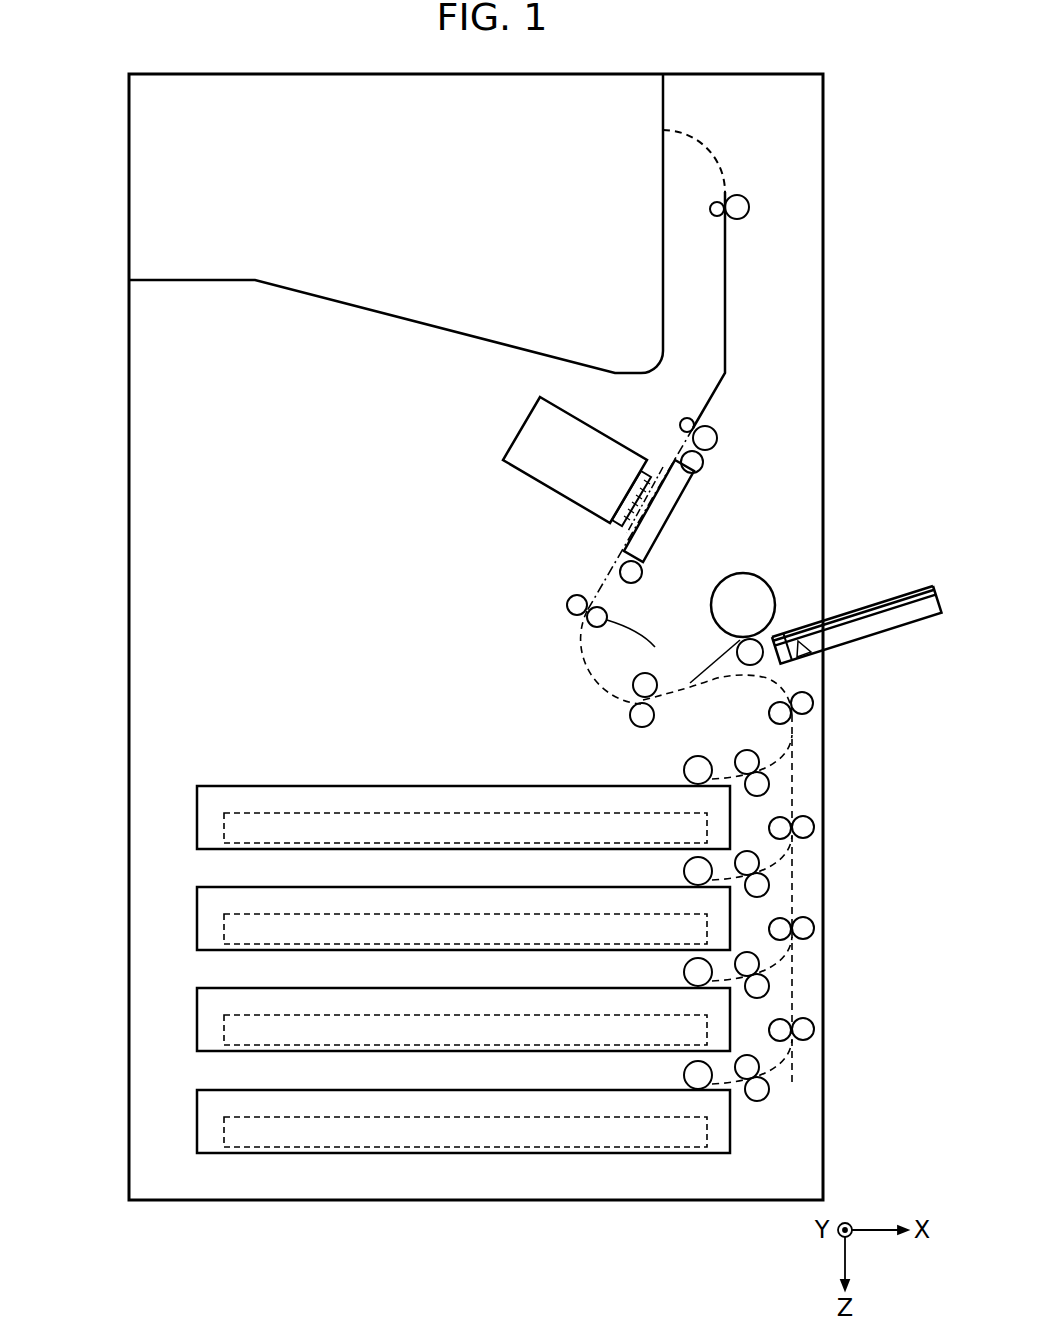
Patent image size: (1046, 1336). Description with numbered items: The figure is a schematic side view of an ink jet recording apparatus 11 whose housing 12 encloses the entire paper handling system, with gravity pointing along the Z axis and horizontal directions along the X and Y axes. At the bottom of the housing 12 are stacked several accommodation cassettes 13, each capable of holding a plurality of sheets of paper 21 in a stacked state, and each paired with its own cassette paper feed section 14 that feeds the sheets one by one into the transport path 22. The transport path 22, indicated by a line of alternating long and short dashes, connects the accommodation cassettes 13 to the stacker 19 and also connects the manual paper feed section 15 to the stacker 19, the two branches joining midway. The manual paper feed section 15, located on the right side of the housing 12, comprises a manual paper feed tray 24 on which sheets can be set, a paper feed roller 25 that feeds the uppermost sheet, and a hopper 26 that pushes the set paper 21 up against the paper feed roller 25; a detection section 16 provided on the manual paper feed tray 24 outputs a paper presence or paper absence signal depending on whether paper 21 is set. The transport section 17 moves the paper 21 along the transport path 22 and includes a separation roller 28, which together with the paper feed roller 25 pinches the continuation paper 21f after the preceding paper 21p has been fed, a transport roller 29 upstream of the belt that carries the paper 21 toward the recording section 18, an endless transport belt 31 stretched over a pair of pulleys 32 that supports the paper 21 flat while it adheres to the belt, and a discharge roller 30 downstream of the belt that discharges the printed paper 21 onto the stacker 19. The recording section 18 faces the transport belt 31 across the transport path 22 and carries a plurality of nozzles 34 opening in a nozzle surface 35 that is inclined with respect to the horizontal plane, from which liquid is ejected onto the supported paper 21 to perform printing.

The recording apparatus 11 is at (437, 618).
The housing 12 is at (129, 343).
The accommodation cassette 13 is at (197, 833).
The cassette paper feed section 14 is at (668, 777).
The manual paper feed section 15 is at (839, 588).
The detection section 16 is at (839, 613).
The transport section 17 is at (552, 672).
The recording section 18 is at (519, 512).
The stacker 19 is at (482, 336).
The paper 21 is at (246, 814).
The preceding paper 21p is at (727, 340).
The continuation paper 21f is at (901, 583).
The transport path 22 is at (588, 678).
The manual paper feed tray 24 is at (928, 625).
The paper feed roller 25 is at (758, 580).
The hopper 26 is at (783, 662).
The separation roller 28 is at (735, 683).
The transport roller 29 is at (658, 668).
The discharge roller 30 is at (750, 212).
The transport belt 31 is at (670, 530).
The pulleys 32 is at (701, 478).
The nozzles 34 is at (625, 500).
The nozzle surface 35 is at (663, 468).